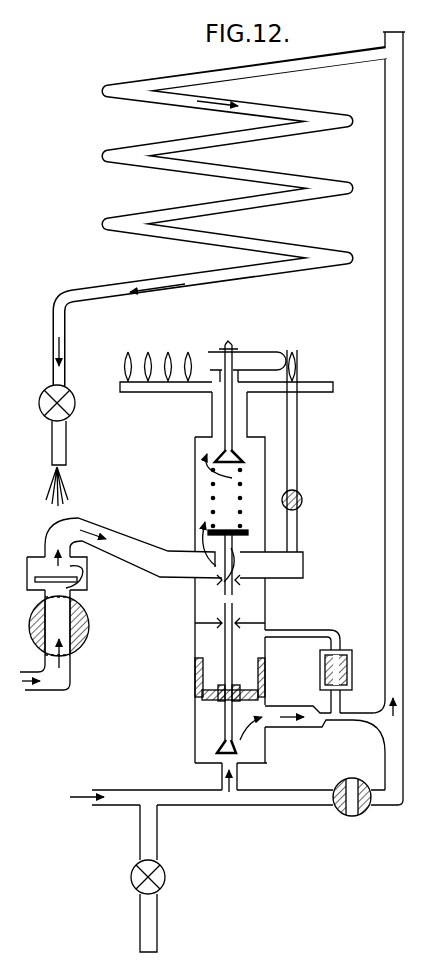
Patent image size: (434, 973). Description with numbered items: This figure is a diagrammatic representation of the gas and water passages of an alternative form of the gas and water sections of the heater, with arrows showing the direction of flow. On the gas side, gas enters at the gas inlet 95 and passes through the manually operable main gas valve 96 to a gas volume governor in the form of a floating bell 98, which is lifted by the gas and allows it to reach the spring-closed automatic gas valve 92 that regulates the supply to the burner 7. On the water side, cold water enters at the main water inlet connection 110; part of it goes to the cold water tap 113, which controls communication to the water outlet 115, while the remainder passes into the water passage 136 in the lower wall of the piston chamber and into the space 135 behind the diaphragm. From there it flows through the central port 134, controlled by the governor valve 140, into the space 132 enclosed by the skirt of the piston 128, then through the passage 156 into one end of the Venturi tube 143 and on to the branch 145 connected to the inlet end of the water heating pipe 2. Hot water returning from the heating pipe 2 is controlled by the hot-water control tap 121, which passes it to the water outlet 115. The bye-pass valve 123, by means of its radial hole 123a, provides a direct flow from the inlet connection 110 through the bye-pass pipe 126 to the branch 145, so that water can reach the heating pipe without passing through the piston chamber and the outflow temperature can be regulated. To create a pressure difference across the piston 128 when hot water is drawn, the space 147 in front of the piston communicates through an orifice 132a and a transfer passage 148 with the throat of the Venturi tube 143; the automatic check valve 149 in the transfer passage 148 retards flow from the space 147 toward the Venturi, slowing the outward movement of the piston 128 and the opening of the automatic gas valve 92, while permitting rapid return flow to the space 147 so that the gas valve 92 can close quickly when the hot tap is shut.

The water heating pipe 2 is at (163, 160).
The burner 7 is at (157, 393).
The automatic gas valve 92 is at (216, 527).
The gas inlet 95 is at (168, 567).
The main gas valve 96 is at (80, 626).
The floating bell 98 is at (78, 580).
The main water inlet connection 110 is at (124, 795).
The cold water tap 113 is at (133, 875).
The water outlet 115 is at (60, 443).
The hot-water control tap 121 is at (70, 407).
The bye-pass valve 123 is at (370, 803).
The radial hole 123a is at (333, 805).
The bye-pass pipe 126 is at (392, 770).
The piston 128 is at (197, 678).
The space enclosed by the piston skirt 132 is at (208, 720).
The orifice 132a is at (295, 632).
The central port 134 is at (215, 741).
The space behind the diaphragm 135 is at (206, 753).
The water passage 136 is at (236, 766).
The governor valve 140 is at (233, 747).
The Venturi tube 143 is at (355, 713).
The branch 145 is at (390, 603).
The space in front of the piston 147 is at (212, 648).
The transfer passage 148 is at (330, 698).
The automatic check valve 149 is at (327, 665).
The passage 156 is at (275, 705).